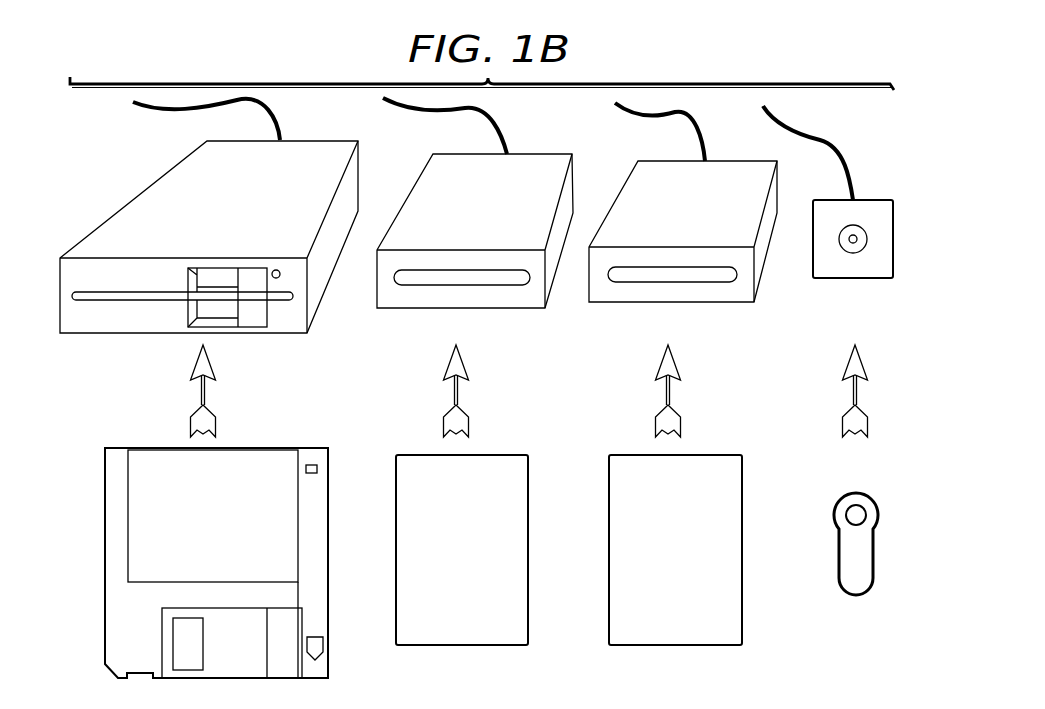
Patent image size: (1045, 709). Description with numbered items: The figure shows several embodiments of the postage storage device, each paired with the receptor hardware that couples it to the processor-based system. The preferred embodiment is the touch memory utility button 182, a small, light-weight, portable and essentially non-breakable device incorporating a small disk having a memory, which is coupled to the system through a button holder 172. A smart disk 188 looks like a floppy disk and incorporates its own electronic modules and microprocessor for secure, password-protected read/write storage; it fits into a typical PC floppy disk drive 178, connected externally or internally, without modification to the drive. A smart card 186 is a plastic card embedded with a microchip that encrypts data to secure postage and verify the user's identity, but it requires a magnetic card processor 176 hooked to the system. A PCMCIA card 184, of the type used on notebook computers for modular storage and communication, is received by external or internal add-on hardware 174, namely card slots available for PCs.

The button holder 172 is at (873, 282).
The add-on hardware 174 is at (722, 168).
The magnetic card processor 176 is at (535, 163).
The floppy disk drive 178 is at (158, 186).
The touch memory utility button 182 is at (837, 498).
The PCMCIA card 184 is at (708, 454).
The smart card 186 is at (495, 454).
The smart disk 188 is at (153, 447).